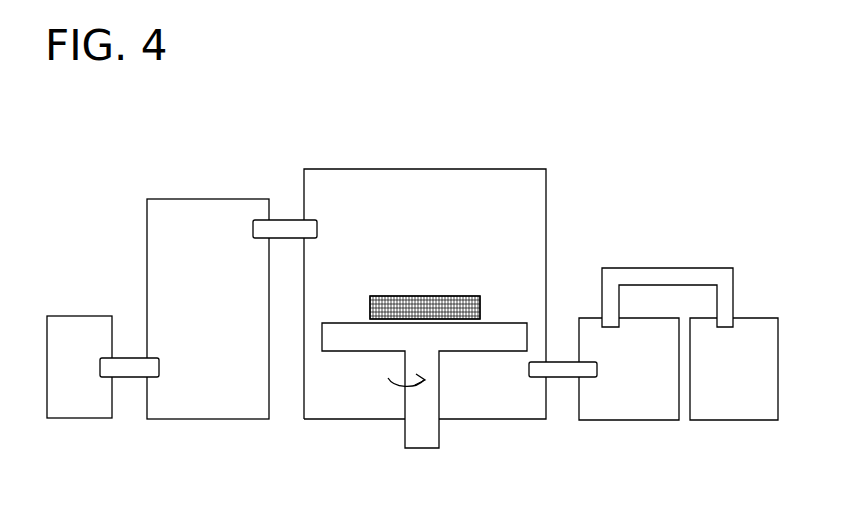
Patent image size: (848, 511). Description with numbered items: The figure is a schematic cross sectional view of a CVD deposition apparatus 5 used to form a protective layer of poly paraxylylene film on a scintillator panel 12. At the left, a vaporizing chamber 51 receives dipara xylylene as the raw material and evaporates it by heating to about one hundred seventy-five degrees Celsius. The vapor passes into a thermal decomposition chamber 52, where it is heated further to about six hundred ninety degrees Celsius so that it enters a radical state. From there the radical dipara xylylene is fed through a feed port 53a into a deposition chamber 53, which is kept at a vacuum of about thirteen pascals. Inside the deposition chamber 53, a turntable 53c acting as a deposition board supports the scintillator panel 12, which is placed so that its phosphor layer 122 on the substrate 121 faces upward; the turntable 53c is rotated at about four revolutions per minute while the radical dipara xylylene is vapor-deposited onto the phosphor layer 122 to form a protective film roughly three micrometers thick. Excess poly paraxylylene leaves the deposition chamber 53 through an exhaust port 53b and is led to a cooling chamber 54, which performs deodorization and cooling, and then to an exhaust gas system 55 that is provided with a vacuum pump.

The CVD deposition apparatus 5 is at (414, 86).
The scintillator panel 12 is at (437, 266).
The vaporizing chamber 51 is at (78, 326).
The thermal decomposition chamber 52 is at (200, 207).
The deposition chamber 53 is at (355, 173).
The feed port 53a is at (283, 216).
The exhaust port 53b is at (570, 380).
The turntable 53c is at (360, 354).
The cooling chamber 54 is at (628, 405).
The exhaust gas system 55 is at (737, 405).
The substrate 121 is at (488, 322).
The phosphor layer 122 is at (483, 300).